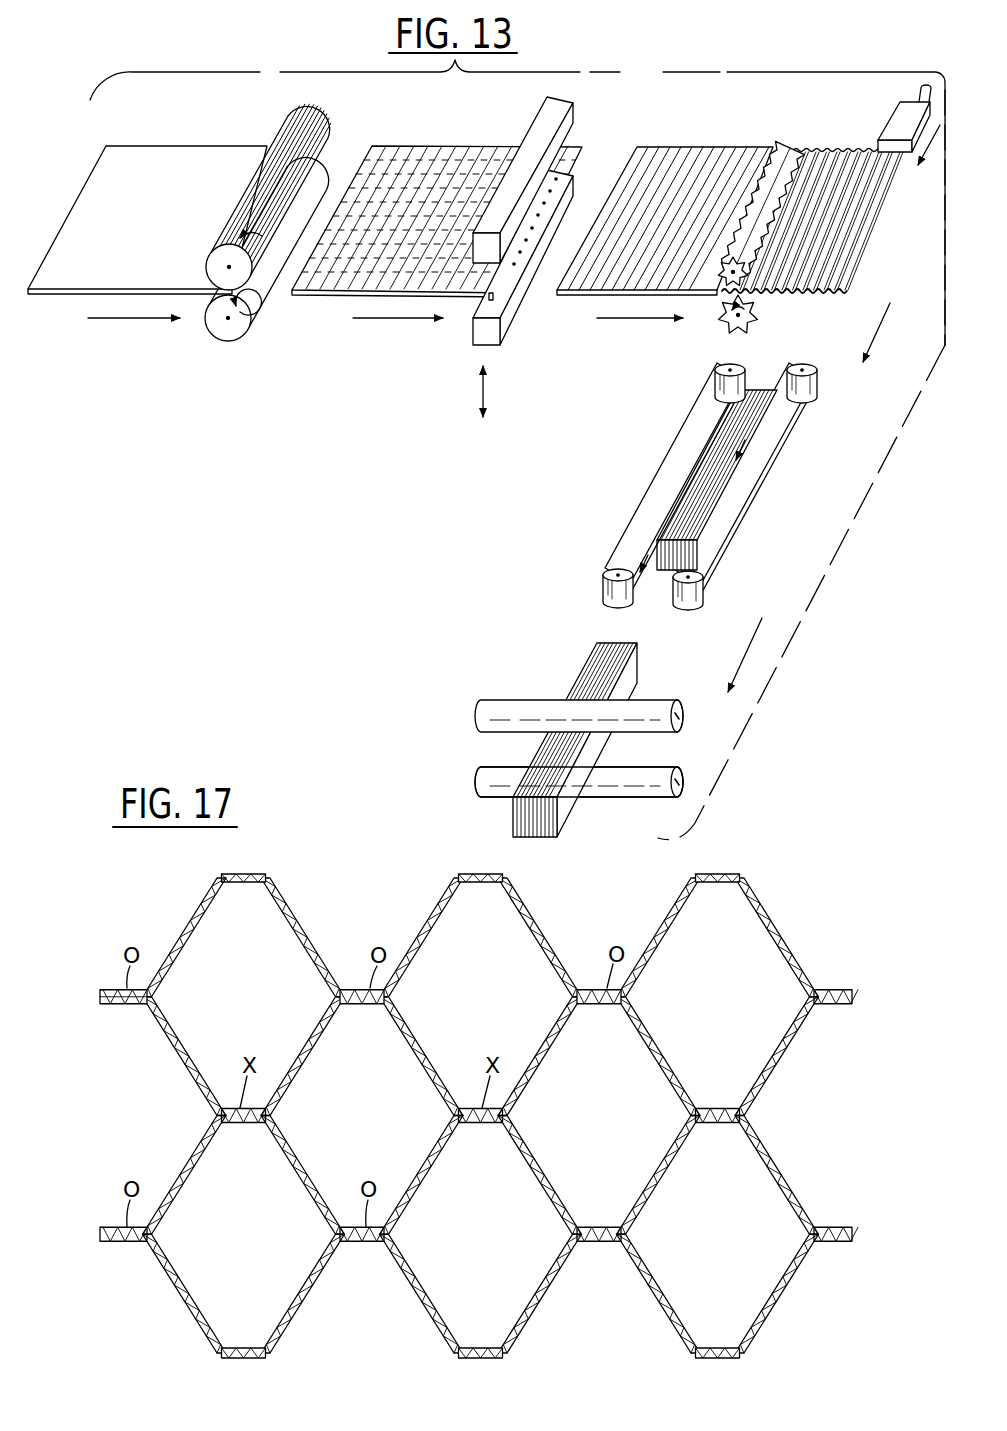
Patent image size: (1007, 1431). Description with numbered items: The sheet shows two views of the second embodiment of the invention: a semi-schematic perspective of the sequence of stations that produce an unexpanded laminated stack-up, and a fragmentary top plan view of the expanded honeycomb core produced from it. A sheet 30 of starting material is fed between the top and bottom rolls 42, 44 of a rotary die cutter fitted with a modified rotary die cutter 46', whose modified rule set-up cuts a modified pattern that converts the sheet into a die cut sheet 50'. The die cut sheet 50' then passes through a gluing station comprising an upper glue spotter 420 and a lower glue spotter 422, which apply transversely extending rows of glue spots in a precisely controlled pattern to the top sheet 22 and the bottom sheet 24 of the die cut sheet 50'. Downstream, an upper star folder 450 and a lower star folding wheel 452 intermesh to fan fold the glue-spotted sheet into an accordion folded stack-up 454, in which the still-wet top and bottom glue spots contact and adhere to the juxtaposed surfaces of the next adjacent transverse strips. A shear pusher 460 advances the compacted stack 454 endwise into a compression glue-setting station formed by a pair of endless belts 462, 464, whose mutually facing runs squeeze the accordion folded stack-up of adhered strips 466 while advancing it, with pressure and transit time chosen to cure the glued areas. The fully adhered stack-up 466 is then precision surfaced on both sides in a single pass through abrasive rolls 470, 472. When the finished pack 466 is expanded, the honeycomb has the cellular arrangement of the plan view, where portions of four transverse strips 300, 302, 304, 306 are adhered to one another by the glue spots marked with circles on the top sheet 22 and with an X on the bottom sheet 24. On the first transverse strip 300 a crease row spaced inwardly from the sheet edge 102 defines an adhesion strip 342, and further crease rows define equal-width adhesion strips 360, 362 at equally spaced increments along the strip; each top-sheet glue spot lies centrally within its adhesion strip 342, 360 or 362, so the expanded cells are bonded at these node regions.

In FIG. 13, the sheet of starting material 30 is at (143, 160).
In FIG. 13, the top roll 42 is at (325, 103).
In FIG. 13, the bottom roll 44 is at (328, 157).
In FIG. 13, the modified rotary die cutter 46' is at (275, 174).
In FIG. 13, the die cut sheet 50' is at (532, 197).
In FIG. 13, the upper glue spotter 420 is at (582, 111).
In FIG. 13, the lower glue spotter 422 is at (517, 325).
In FIG. 13, the star folder 450 is at (805, 140).
In FIG. 13, the star folding wheel 452 is at (725, 331).
In FIG. 13, the accordion folded stack-up 454 is at (828, 292).
In FIG. 13, the shear pusher 460 is at (900, 116).
In FIG. 13, the endless belt 462 is at (677, 437).
In FIG. 13, the endless belt 464 is at (747, 515).
In FIG. 13, the accordion folded stack-up of adhered strips 466 is at (760, 386).
In FIG. 13, the abrasive roll 470 is at (475, 711).
In FIG. 13, the abrasive roll 472 is at (475, 781).
In FIG. 17, the transverse strip 300 is at (193, 912).
In FIG. 17, the bottom sheet 24 is at (180, 933).
In FIG. 17, the top sheet 22 is at (173, 1198).
In FIG. 17, the adhesion strip 342 is at (108, 988).
In FIG. 17, the sheet edge 102 is at (95, 999).
In FIG. 17, the transverse strip 302 is at (155, 1027).
In FIG. 17, the transverse strip 304 is at (173, 1175).
In FIG. 17, the transverse strip 306 is at (185, 1308).
In FIG. 17, the adhesion strip 360 is at (350, 990).
In FIG. 17, the adhesion strip 362 is at (587, 988).